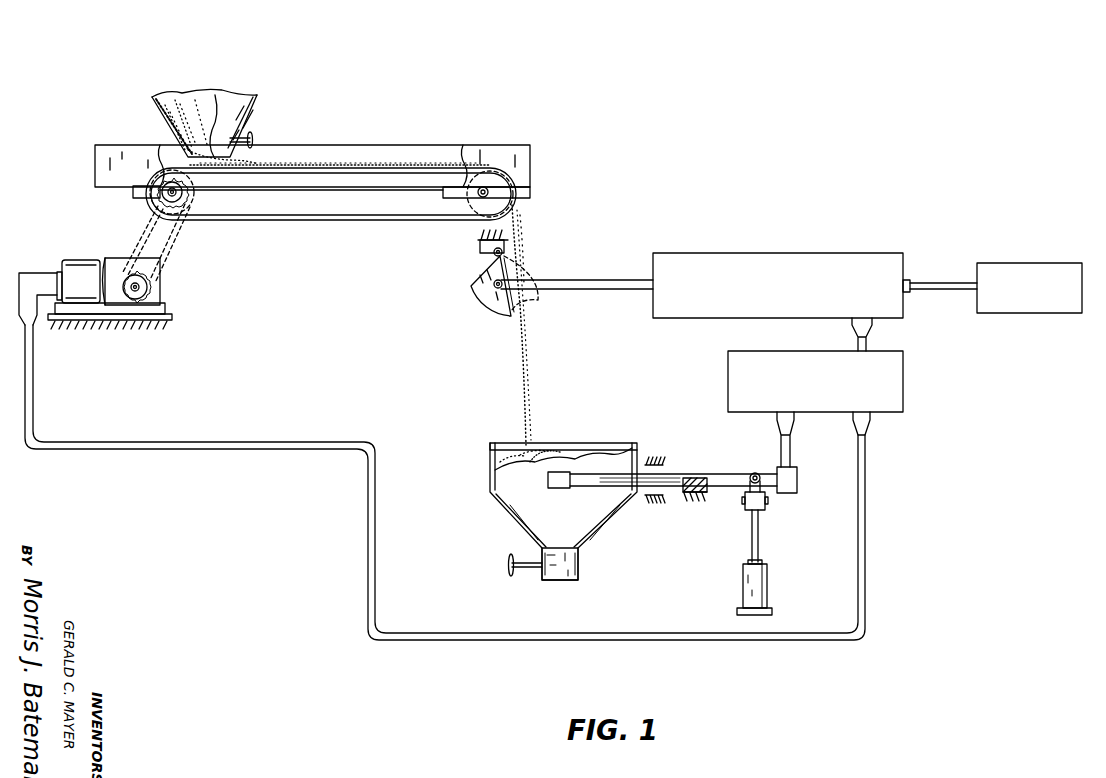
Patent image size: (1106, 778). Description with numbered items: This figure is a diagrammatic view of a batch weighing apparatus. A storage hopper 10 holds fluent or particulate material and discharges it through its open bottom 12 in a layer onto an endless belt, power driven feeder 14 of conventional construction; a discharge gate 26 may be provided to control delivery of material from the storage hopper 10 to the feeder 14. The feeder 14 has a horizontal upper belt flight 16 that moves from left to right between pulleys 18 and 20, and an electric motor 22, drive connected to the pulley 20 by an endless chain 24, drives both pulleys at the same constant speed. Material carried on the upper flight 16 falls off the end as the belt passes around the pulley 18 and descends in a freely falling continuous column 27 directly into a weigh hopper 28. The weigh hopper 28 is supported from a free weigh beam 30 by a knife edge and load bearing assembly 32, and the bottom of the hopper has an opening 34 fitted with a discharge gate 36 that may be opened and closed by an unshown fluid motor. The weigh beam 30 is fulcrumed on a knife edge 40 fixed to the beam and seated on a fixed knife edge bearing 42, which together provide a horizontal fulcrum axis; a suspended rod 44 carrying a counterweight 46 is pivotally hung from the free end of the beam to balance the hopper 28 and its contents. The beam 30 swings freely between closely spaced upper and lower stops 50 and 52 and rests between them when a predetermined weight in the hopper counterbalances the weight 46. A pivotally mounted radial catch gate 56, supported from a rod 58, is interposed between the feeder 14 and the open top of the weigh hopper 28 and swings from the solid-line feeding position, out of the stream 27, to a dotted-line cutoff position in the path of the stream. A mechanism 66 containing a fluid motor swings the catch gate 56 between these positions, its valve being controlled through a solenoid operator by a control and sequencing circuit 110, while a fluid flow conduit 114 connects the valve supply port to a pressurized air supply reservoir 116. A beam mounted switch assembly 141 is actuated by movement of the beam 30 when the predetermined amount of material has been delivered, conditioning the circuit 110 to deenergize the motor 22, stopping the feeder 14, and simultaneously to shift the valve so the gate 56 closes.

The storage hopper 10 is at (258, 114).
The open bottom 12 is at (232, 152).
The power driven feeder 14 is at (430, 136).
The upper belt flight 16 is at (358, 158).
The pulley 18 is at (473, 207).
The pulley 20 is at (198, 203).
The electric motor 22 is at (74, 260).
The endless chain 24 is at (132, 235).
The discharge gate 26 is at (255, 138).
The continuous column 27 is at (535, 384).
The weigh hopper 28 is at (606, 528).
The weigh beam 30 is at (632, 468).
The knife edge and load bearing assembly 32 is at (560, 470).
The opening 34 is at (564, 584).
The discharge gate 36 is at (525, 578).
The knife edge 40 is at (696, 476).
The knife edge bearing 42 is at (708, 494).
The link 44 is at (760, 530).
The counterweight 46 is at (764, 583).
The upper stop 50 is at (668, 464).
The lower stop 52 is at (666, 505).
The radial catch gate 56 is at (490, 288).
The rod 58 is at (490, 254).
The mechanism 66 is at (720, 253).
The control and sequencing circuit 110 is at (904, 380).
The fluid flow conduit 114 is at (930, 280).
The pressurized air supply reservoir 116 is at (1030, 262).
The beam mounted switch assembly 141 is at (798, 475).